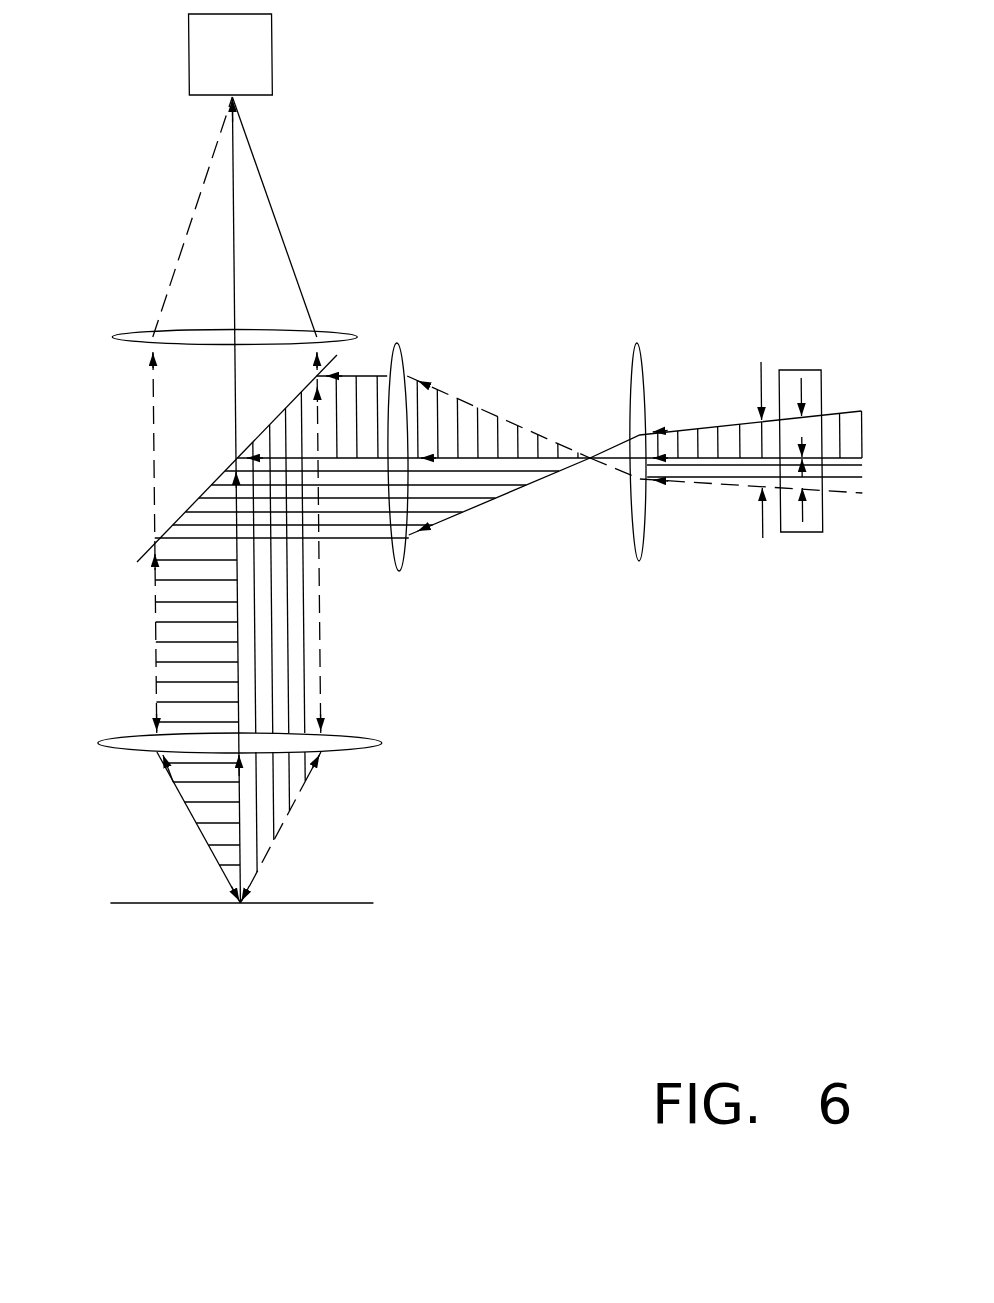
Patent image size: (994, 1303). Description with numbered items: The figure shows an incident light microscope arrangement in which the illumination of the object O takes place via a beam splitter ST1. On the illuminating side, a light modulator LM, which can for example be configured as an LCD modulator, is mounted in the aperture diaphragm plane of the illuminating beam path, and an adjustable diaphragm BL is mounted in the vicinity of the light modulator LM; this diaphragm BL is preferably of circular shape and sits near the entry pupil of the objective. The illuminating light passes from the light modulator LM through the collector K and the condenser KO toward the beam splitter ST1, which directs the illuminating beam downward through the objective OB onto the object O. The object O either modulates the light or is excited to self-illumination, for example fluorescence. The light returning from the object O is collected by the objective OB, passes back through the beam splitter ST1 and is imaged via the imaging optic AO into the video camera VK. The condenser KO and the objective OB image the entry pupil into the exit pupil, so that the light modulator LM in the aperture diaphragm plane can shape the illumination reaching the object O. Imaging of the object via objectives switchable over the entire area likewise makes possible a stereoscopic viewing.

The video camera VK is at (272, 53).
The imaging optic AO is at (213, 338).
The beam splitter ST1 is at (145, 554).
The condenser KO is at (401, 567).
The collector K is at (640, 562).
The adjustable diaphragm BL is at (761, 436).
The light modulator LM is at (813, 532).
The objective OB is at (381, 741).
The object O is at (373, 903).